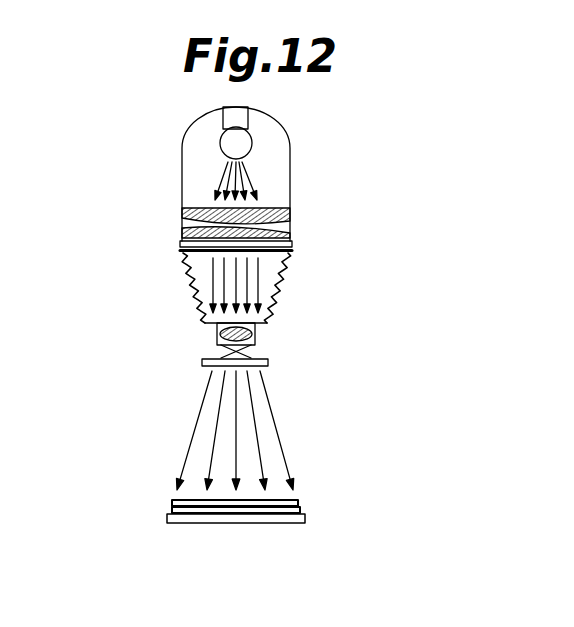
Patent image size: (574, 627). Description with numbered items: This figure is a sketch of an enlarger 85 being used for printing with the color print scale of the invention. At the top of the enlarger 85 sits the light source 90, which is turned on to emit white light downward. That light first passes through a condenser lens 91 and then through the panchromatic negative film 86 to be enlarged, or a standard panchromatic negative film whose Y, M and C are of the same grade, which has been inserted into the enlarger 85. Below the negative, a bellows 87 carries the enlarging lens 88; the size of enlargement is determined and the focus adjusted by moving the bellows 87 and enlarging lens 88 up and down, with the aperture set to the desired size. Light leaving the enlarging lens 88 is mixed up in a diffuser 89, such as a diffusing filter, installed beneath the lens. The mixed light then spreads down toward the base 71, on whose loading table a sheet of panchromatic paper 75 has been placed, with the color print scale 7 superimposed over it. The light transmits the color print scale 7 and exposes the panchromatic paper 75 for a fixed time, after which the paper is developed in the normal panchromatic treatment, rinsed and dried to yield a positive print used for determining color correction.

The enlarger 85 is at (182, 152).
The light source 90 is at (252, 145).
The condenser lens 91 is at (183, 232).
The panchromatic negative film 86 is at (292, 244).
The bellows 87 is at (284, 285).
The enlarging lens 88 is at (255, 338).
The diffuser 89 is at (202, 362).
The color print scale 7 is at (172, 501).
The panchromatic paper 75 is at (172, 511).
The base 71 is at (178, 523).